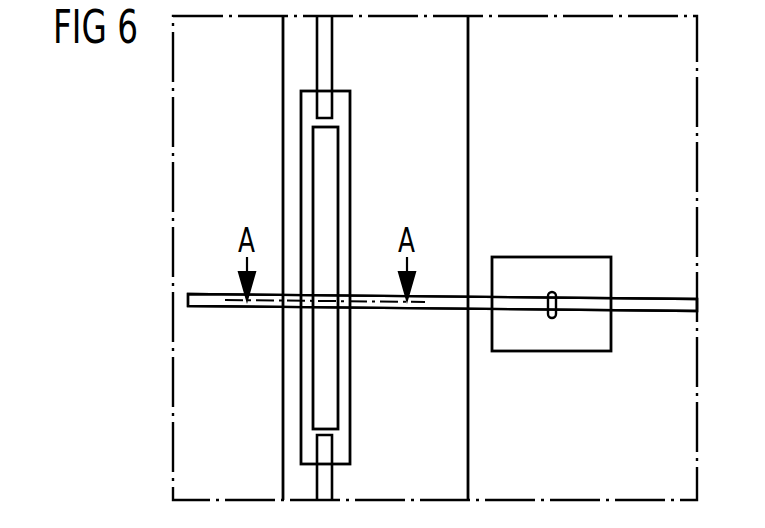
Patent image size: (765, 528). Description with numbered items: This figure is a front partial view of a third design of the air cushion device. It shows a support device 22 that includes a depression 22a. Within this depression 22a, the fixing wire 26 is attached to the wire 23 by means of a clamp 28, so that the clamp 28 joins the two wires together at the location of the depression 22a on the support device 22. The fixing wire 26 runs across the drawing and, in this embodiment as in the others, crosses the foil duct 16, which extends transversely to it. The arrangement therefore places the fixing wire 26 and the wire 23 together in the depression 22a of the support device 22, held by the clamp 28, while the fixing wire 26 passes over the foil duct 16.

The support device 22 is at (292, 67).
The foil duct 16 is at (330, 163).
The depression 22a is at (585, 265).
The wire 23 is at (442, 302).
The fixing wire 26 is at (655, 313).
The clamp 28 is at (552, 291).